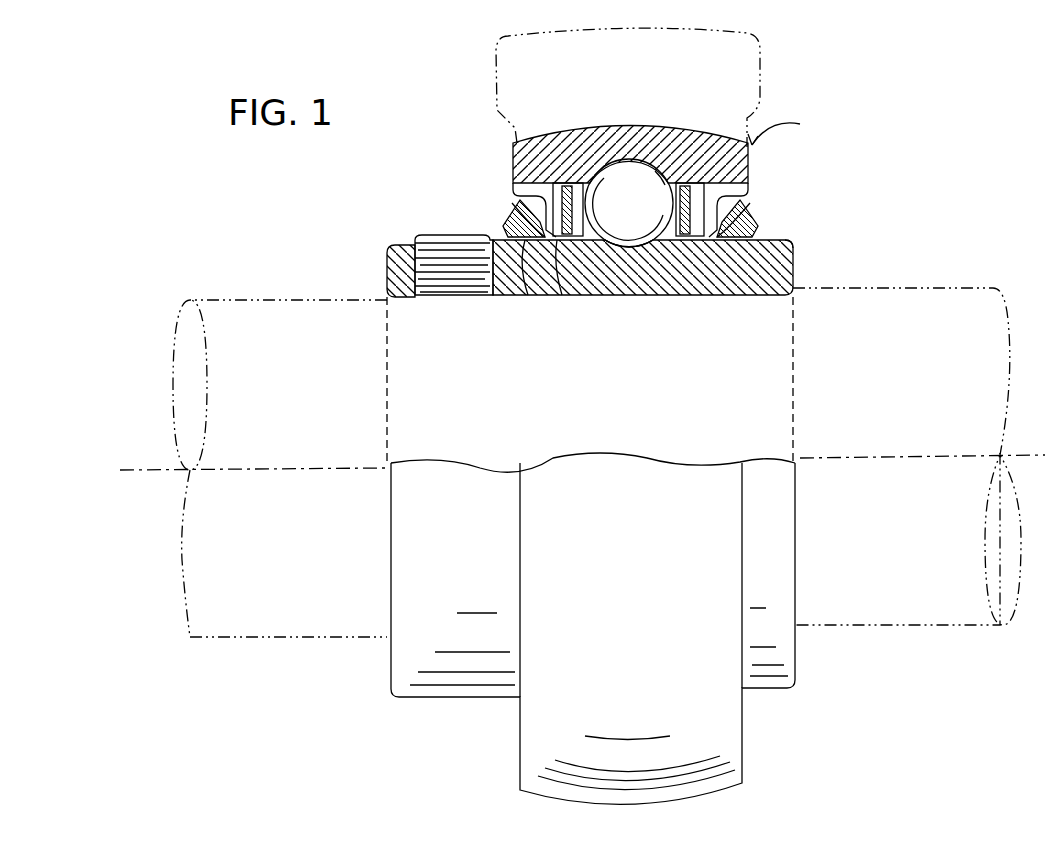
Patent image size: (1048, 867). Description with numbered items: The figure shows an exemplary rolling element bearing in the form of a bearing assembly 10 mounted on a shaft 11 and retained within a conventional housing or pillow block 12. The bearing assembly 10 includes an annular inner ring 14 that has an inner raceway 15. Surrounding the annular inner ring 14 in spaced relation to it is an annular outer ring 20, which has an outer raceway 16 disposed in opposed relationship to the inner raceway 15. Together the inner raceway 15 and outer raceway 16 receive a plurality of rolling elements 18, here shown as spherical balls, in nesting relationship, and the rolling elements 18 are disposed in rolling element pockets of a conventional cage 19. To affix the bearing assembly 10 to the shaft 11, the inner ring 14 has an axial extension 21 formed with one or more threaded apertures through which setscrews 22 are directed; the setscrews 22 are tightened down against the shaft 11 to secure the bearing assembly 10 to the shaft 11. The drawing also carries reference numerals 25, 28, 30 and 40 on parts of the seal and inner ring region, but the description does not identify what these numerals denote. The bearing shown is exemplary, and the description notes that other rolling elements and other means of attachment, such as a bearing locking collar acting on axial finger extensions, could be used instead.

The bearing assembly 10 is at (789, 128).
The shaft 11 is at (963, 285).
The housing or pillow block 12 is at (763, 33).
The annular inner ring 14 is at (792, 266).
The inner raceway 15 is at (628, 247).
The outer raceway 16 is at (633, 157).
The rolling elements 18 is at (647, 173).
The cage 19 is at (515, 161).
The annular outer ring 20 is at (542, 138).
The axial extension 21 is at (385, 255).
The setscrews 22 is at (423, 235).
The seal lip 25 is at (518, 193).
The seal 28 is at (753, 208).
The inner ring extension 30 is at (560, 240).
The groove 40 is at (538, 237).